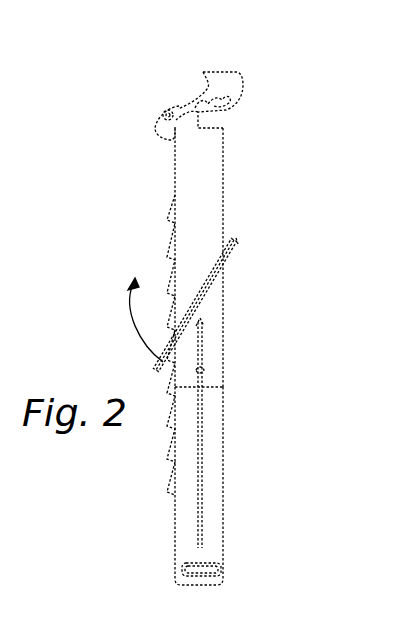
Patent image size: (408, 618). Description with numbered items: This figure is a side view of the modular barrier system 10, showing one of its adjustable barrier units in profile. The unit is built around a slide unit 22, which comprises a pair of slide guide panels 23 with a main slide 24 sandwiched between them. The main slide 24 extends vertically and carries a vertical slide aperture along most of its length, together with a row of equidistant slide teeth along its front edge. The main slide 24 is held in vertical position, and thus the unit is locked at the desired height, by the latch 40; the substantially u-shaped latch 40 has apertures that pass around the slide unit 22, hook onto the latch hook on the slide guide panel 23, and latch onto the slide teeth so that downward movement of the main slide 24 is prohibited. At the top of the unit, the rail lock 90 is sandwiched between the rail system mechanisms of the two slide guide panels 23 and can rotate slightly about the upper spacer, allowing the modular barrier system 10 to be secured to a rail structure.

The modular barrier system 10 is at (239, 56).
The rail lock 90 is at (155, 126).
The slide unit 22 is at (203, 195).
The latch 40 is at (207, 293).
The slide guide panel 23 is at (217, 362).
The main slide 24 is at (213, 477).